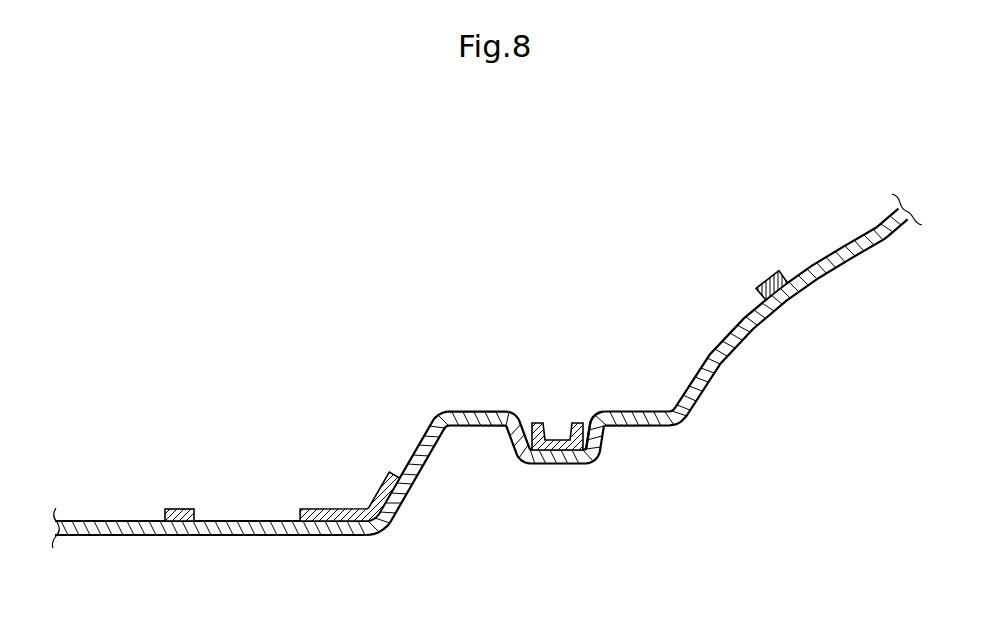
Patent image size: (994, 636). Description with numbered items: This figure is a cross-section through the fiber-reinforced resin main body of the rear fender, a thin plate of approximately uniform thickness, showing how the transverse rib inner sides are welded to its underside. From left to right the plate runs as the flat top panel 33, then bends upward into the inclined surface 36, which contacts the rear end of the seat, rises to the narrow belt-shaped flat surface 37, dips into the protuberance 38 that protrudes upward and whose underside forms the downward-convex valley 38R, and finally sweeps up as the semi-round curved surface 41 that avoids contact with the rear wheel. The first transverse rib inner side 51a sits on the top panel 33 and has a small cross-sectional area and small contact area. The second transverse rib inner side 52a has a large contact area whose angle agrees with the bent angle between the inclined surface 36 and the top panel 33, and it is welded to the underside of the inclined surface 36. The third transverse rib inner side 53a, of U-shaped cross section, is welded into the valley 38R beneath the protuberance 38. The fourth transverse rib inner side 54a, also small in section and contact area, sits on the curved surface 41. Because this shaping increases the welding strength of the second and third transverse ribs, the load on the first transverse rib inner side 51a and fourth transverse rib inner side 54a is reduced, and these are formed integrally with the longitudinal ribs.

The top panel 33 is at (137, 528).
The inclined surface 36 is at (395, 508).
The flat surface 37 is at (484, 427).
The protuberance 38 is at (577, 465).
The valley 38R is at (587, 421).
The curved surface 41 is at (818, 279).
The first transverse rib inner side 51a is at (183, 508).
The second transverse rib inner side 52a is at (325, 508).
The third transverse rib inner side 53a is at (563, 424).
The fourth transverse rib inner side 54a is at (764, 282).